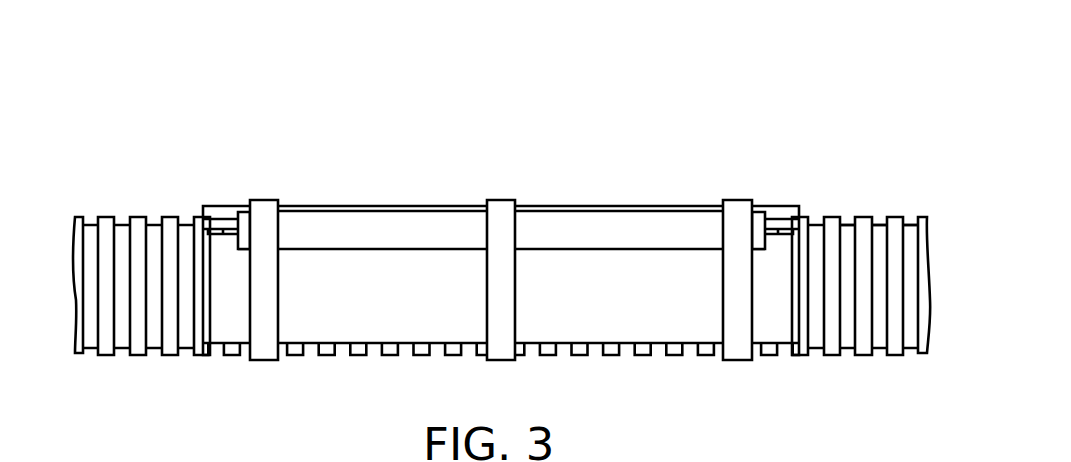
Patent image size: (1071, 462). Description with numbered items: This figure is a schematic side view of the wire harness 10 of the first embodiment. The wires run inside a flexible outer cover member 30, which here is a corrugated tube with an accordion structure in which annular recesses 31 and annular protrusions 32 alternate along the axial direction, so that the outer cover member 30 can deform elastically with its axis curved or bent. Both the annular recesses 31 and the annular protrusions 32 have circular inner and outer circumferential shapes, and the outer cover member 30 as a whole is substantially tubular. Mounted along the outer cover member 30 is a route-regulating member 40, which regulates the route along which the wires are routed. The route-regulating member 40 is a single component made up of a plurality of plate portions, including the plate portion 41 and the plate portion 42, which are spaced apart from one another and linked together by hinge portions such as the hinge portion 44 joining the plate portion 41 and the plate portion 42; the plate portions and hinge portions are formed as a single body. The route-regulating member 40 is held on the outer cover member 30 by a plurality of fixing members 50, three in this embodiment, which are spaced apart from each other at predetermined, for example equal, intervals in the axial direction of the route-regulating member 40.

The wire harness 10 is at (830, 101).
The outer cover member 30 is at (923, 230).
The annular recesses 31 is at (912, 232).
The annular protrusions 32 is at (895, 350).
The route-regulating member 40 is at (633, 203).
The plate portion 41 is at (392, 313).
The plate portion 42 is at (220, 210).
The hinge portion 44 is at (388, 213).
The fixing member 50 is at (738, 203).